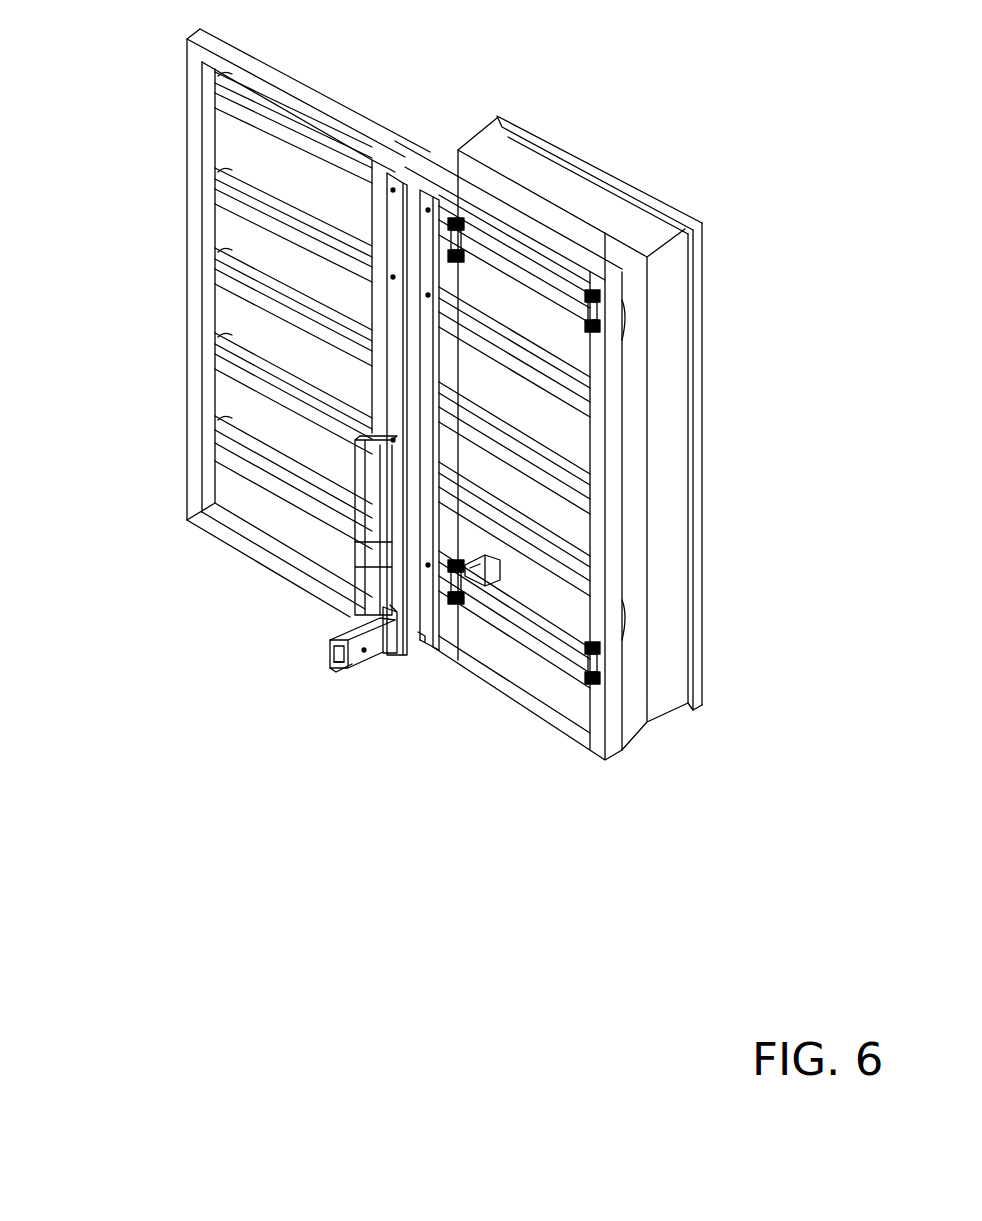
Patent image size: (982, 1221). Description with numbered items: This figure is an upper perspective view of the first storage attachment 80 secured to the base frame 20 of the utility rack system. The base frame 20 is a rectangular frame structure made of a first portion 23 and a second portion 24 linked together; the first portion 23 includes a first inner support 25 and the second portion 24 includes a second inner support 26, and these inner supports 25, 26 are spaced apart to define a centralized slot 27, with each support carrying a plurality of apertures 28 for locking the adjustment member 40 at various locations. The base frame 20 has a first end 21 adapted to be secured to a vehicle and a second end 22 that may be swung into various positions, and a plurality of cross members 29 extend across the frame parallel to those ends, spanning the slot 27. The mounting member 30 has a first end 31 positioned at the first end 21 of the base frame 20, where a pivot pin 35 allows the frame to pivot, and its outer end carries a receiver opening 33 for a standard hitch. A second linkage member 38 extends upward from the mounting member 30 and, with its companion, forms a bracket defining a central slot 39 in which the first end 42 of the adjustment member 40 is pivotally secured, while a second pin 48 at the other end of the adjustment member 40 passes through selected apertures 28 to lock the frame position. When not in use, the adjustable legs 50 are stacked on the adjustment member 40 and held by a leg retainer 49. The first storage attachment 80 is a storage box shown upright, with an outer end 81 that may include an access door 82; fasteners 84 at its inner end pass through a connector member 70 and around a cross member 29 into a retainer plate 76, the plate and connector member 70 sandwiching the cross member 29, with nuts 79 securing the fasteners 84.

The base frame 20 is at (178, 123).
The first end 21 is at (260, 575).
The second end 22 is at (331, 110).
The first portion 23 is at (192, 280).
The second portion 24 is at (600, 534).
The first inner support 25 is at (384, 176).
The second inner support 26 is at (462, 210).
The centralized slot 27 is at (416, 188).
The apertures 28 is at (432, 293).
The cross members 29 is at (215, 192).
The mounting member 30 is at (333, 653).
The first end 31 is at (338, 671).
The receiver opening 33 is at (337, 669).
The pivot pin 35 is at (434, 647).
The second linkage member 38 is at (384, 665).
The central slot 39 is at (347, 630).
The adjustment member 40 is at (388, 405).
The first end 42 is at (378, 332).
The second pin 48 is at (600, 398).
The leg retainer 49 is at (352, 497).
The adjustable legs 50 is at (343, 597).
The connector member 70 is at (598, 618).
The retainer plate 76 is at (598, 318).
The nuts 79 is at (592, 340).
The first storage attachment 80 is at (662, 667).
The outer end 81 is at (704, 356).
The access door 82 is at (672, 205).
The fasteners 84 is at (470, 578).